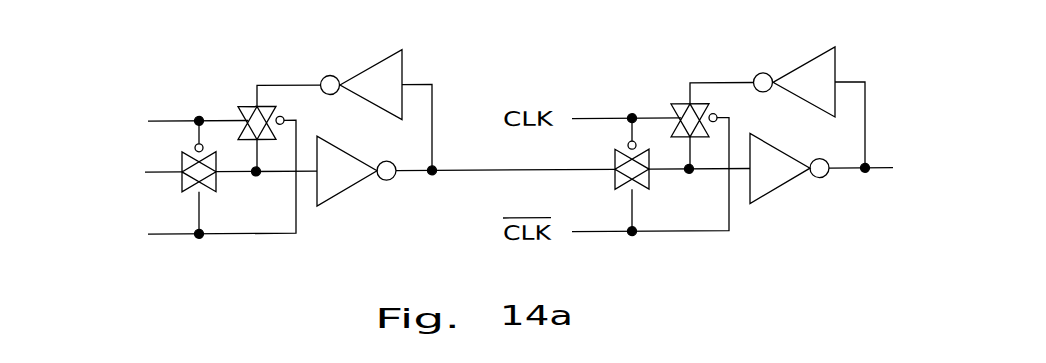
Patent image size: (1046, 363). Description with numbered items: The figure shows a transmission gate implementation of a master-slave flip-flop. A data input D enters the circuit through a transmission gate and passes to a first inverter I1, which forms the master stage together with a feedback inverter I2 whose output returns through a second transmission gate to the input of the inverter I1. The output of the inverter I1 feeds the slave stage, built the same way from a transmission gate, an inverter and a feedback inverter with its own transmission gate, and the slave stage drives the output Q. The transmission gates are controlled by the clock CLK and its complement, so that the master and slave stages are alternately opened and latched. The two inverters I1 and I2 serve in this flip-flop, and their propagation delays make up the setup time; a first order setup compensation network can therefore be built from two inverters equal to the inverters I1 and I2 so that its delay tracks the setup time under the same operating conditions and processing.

The inverter I1 is at (356, 171).
The inverter I2 is at (362, 85).
The data input D is at (151, 173).
The output Q is at (872, 169).
The clock input CLK is at (143, 105).